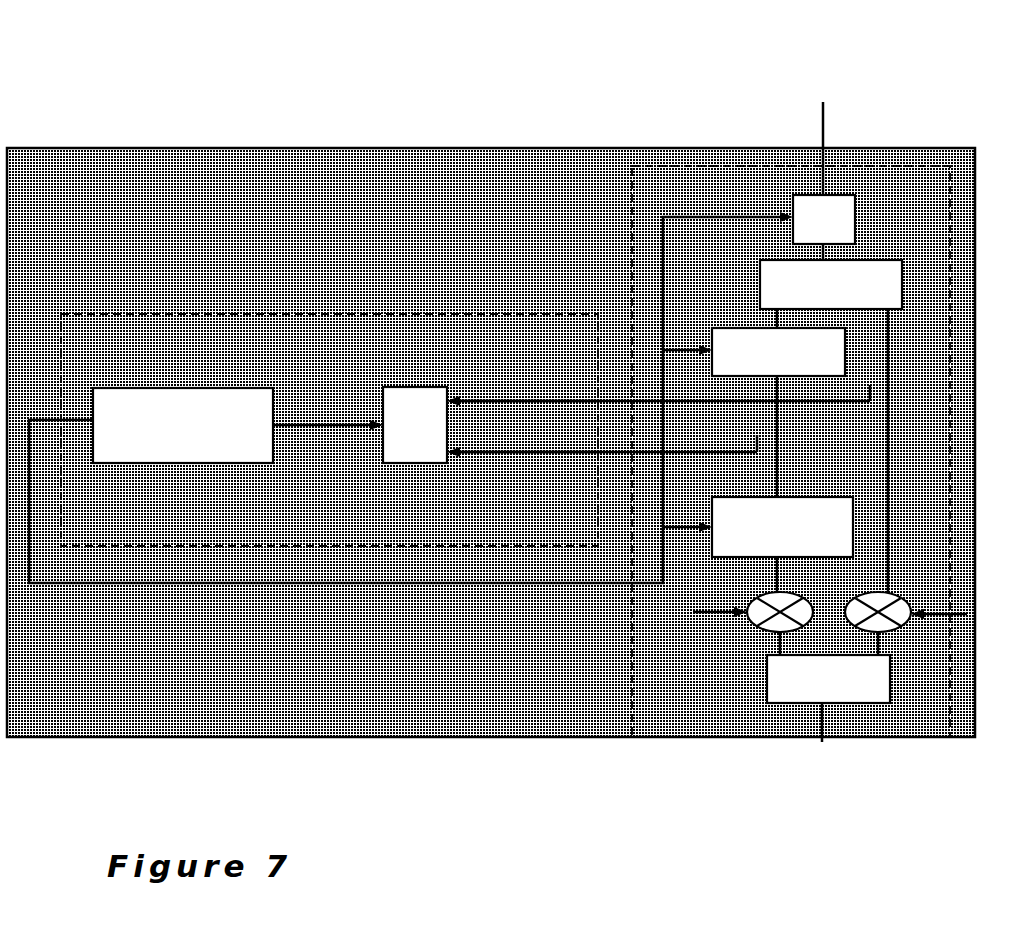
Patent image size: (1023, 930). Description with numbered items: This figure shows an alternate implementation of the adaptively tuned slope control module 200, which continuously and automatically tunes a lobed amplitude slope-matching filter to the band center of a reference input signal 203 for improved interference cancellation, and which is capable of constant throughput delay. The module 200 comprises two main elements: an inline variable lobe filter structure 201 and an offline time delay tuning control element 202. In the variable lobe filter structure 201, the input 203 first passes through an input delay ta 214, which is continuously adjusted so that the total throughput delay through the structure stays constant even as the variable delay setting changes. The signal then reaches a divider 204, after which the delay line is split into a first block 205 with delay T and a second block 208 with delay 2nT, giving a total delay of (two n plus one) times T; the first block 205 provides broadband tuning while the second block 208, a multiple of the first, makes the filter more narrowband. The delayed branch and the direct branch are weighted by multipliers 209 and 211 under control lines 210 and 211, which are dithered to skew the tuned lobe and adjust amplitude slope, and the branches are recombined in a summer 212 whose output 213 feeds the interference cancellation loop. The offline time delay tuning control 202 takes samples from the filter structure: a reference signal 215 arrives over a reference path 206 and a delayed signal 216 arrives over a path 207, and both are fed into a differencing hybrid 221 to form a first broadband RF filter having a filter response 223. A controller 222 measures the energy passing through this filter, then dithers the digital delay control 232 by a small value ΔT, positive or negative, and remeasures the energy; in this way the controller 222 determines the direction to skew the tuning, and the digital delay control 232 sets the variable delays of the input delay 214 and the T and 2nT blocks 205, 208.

The adaptively tuned slope control module 200 is at (491, 442).
The variable lobe filter structure 201 is at (791, 451).
The time delay tuning control element 202 is at (329, 430).
The reference input signal 203 is at (872, 148).
The divider 204 is at (831, 426).
The first delay block T 205 is at (778, 412).
The reference signal path 206 is at (658, 394).
The delayed signal path 207 is at (602, 445).
The second delay block 2nT 208 is at (782, 544).
The multiplier 209 is at (792, 616).
The control line 210 is at (717, 603).
The control line 211 is at (906, 616).
The summer 212 is at (828, 679).
The output 213 is at (835, 722).
The input delay ta 214 is at (843, 227).
The reference signal 215 is at (527, 402).
The delayed signal 216 is at (527, 464).
The differencing hybrid 221 is at (415, 425).
The controller 222 is at (183, 425).
The filter response 223 is at (328, 417).
The digital delay control 232 is at (411, 389).